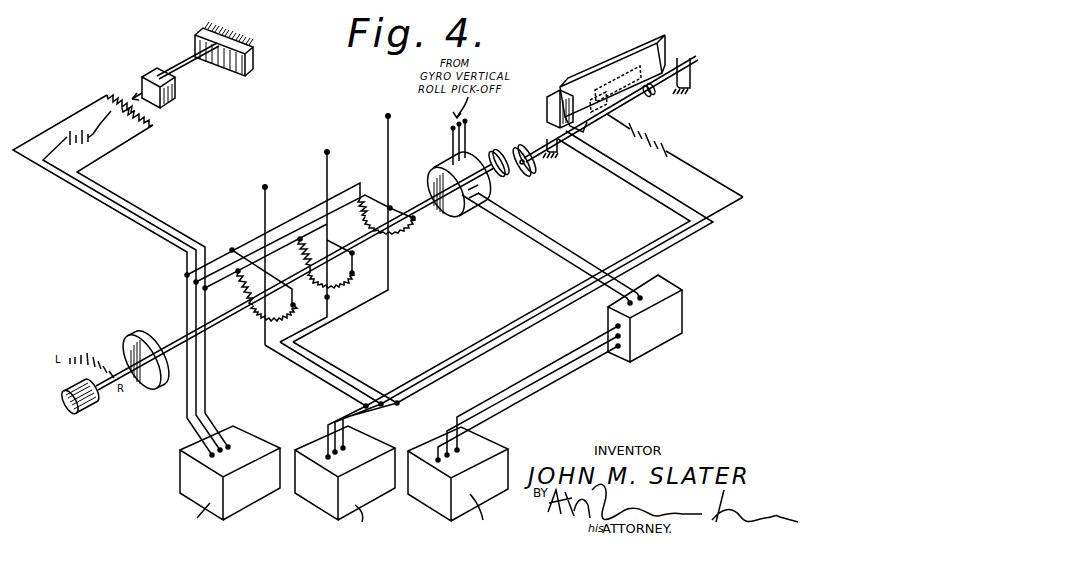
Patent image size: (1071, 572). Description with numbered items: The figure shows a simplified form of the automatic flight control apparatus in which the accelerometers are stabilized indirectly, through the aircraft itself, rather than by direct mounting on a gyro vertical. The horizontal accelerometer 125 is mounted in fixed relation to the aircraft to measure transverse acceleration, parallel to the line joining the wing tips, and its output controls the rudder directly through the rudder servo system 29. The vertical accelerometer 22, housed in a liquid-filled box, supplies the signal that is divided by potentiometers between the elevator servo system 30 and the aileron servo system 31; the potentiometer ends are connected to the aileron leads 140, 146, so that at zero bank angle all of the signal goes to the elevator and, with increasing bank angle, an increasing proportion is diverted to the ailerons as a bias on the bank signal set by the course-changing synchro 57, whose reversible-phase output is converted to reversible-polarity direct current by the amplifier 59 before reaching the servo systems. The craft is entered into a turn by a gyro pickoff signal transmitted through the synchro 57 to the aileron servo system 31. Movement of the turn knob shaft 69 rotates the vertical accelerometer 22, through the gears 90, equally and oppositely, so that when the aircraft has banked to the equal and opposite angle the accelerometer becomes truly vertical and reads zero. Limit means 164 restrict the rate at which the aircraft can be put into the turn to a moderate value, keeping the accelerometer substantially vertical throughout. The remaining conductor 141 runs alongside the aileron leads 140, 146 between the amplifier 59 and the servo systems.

The horizontal accelerometer 125 is at (187, 75).
The vertical accelerometer 22 is at (594, 85).
The gears 90 is at (517, 149).
The course-changing synchro 57 is at (487, 188).
The turn knob shaft 69 is at (176, 340).
The limit means 164 is at (157, 382).
The rudder servo system 29 is at (183, 478).
The elevator servo system 30 is at (313, 496).
The aileron servo system 31 is at (430, 496).
The amplifier 59 is at (652, 353).
The aileron lead 140 is at (557, 375).
The conductor 141 is at (517, 390).
The aileron lead 146 is at (560, 386).